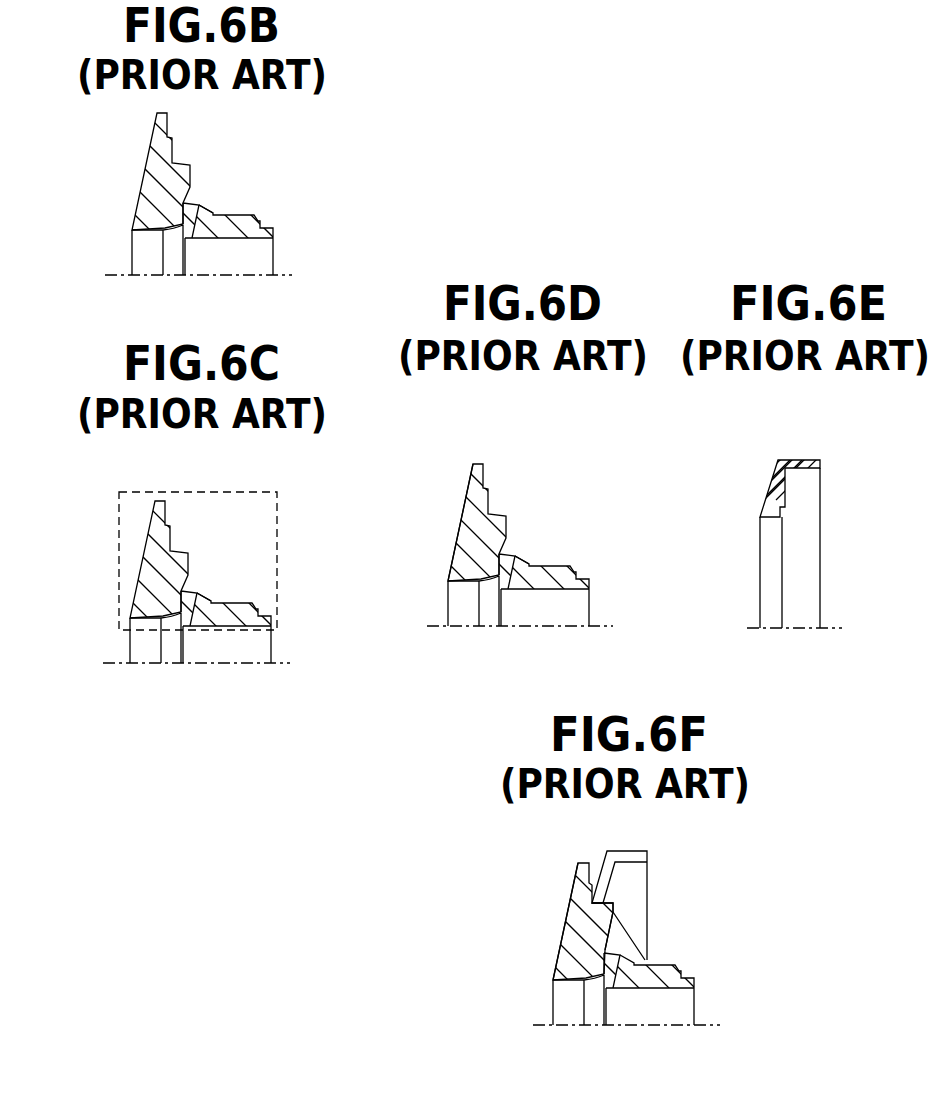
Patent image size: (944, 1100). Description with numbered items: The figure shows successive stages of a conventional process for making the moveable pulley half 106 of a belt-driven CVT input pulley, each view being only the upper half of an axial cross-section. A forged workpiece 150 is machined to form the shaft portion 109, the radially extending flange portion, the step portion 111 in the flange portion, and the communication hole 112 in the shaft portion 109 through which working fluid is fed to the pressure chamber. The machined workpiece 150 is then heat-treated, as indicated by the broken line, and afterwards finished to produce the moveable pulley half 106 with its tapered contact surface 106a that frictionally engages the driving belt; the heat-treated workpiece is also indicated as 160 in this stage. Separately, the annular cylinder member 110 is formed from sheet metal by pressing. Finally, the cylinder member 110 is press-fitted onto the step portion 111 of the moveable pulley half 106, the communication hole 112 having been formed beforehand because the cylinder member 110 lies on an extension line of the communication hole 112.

In FIG. 6F, the moveable pulley half 106 is at (550, 958).
In FIG. 6D, the contact surface 106a is at (420, 522).
In FIG. 6F, the contact surface 106a is at (566, 908).
In FIG. 6B, the shaft portion 109 is at (250, 218).
In FIG. 6C, the shaft portion 109 is at (267, 625).
In FIG. 6D, the shaft portion 109 is at (560, 577).
In FIG. 6F, the shaft portion 109 is at (678, 981).
In FIG. 6E, the cylinder member 110 is at (798, 462).
In FIG. 6F, the cylinder member 110 is at (627, 852).
In FIG. 6B, the step portion 111 is at (182, 158).
In FIG. 6C, the step portion 111 is at (144, 539).
In FIG. 6D, the step portion 111 is at (462, 521).
In FIG. 6F, the step portion 111 is at (617, 915).
In FIG. 6B, the communication hole 112 is at (187, 215).
In FIG. 6C, the communication hole 112 is at (134, 599).
In FIG. 6D, the communication hole 112 is at (451, 578).
In FIG. 6F, the communication hole 112 is at (556, 975).
In FIG. 6B, the workpiece 150 is at (221, 202).
In FIG. 6C, the workpiece 150 is at (270, 559).
In FIG. 6D, the workpiece 150 is at (559, 474).
In FIG. 6D, the gap 160 is at (570, 427).